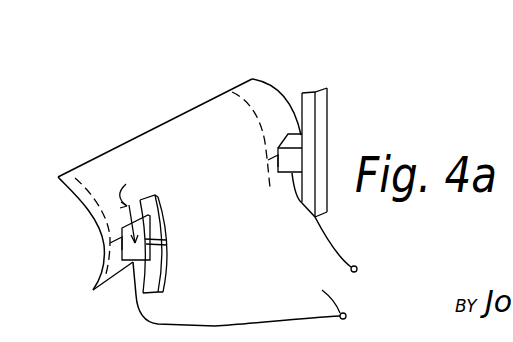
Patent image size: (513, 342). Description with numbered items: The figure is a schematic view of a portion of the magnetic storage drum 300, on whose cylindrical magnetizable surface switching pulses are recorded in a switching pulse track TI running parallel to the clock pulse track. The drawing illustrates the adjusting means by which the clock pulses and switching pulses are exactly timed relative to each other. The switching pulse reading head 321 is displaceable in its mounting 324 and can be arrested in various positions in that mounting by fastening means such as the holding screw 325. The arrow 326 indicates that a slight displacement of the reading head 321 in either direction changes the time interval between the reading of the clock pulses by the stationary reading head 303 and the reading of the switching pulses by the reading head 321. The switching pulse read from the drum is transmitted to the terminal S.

The magnetic storage drum 300 is at (199, 202).
The switching pulse track TI is at (75, 170).
The reading head 321 is at (122, 257).
The arrow 326 is at (119, 203).
The mounting 324 is at (152, 207).
The holding screw 325 is at (168, 238).
The stationary reading head 303 is at (297, 157).
The terminal S is at (351, 272).